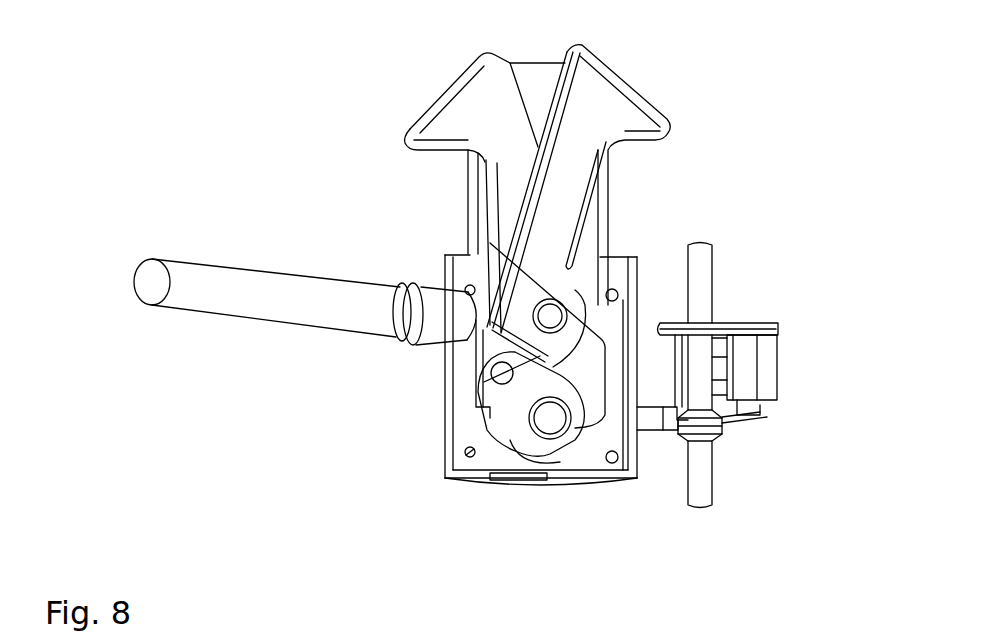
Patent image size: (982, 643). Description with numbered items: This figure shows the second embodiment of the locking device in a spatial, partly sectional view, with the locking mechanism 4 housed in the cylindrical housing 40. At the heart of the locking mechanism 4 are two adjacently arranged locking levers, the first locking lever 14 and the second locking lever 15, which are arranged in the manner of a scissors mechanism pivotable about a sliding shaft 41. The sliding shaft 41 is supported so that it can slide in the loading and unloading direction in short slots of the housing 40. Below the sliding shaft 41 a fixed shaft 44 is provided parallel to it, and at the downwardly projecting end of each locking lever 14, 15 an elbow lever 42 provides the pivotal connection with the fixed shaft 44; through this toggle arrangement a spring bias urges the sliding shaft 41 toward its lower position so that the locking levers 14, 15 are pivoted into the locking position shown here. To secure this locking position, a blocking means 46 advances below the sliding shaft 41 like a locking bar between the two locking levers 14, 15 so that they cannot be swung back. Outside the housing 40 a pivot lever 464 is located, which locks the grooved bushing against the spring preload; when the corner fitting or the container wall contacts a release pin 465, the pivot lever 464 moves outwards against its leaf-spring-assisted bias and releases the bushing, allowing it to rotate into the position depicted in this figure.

The locking mechanism 4 is at (367, 227).
The first locking lever 14 is at (480, 108).
The second locking lever 15 is at (593, 103).
The cylindrical housing 40 is at (462, 415).
The sliding shaft 41 is at (552, 313).
The elbow lever 42 is at (520, 405).
The fixed shaft 44 is at (551, 420).
The blocking means 46 is at (787, 429).
The pivot lever 464 is at (652, 423).
The release pin 465 is at (703, 282).